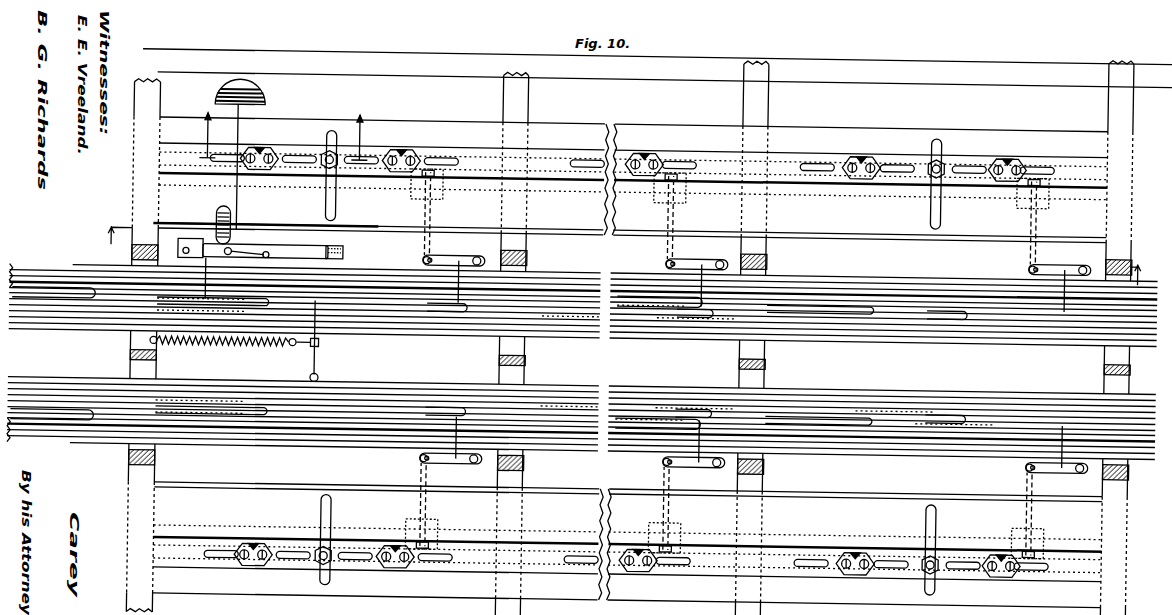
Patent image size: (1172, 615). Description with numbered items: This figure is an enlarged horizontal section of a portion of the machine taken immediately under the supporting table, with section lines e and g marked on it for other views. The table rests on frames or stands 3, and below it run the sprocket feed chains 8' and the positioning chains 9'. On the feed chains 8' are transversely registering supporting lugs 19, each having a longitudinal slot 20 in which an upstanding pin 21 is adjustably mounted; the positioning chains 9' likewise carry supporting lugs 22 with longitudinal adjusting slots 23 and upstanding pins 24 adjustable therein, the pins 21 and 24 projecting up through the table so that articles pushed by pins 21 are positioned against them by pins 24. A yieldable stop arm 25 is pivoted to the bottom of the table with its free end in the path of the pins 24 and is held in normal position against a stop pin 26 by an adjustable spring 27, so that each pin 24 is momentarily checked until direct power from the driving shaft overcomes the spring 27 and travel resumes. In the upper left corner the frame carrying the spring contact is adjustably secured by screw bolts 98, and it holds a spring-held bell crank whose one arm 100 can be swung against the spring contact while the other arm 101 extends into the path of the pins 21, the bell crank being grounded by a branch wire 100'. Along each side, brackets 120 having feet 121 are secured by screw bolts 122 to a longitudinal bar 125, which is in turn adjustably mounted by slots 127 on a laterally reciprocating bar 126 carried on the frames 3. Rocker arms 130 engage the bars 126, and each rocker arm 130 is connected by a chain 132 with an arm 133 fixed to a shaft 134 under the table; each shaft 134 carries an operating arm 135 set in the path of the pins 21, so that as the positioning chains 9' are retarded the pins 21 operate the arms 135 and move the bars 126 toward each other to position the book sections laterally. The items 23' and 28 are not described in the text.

The frame 3 is at (131, 347).
The sprocket feed chain 8' is at (582, 364).
The positioning chain 9' is at (582, 362).
The supporting lug 19 is at (1010, 448).
The longitudinal slot 20 is at (930, 285).
The upstanding pin 21 is at (427, 47).
The supporting lug 22 is at (800, 400).
The longitudinal adjusting slot 23 is at (582, 353).
The upper rail 23' is at (665, 87).
The upstanding pin 24 is at (398, 92).
The yieldable stop arm 25 is at (285, 243).
The stop pin 26 is at (346, 250).
The adjustable spring 27 is at (348, 256).
The lever bar 28 is at (330, 254).
The screw bolt 98 is at (186, 246).
The bell crank arm 100 is at (234, 252).
The branch wire 100' is at (258, 166).
The bell crank arm 101 is at (220, 218).
The bracket 120 is at (272, 150).
The foot 121 is at (264, 168).
The screw bolt 122 is at (680, 160).
The longitudinal bar 125 is at (470, 154).
The laterally reciprocating bar 126 is at (558, 126).
The slot 127 is at (262, 106).
The rocker arm 130 is at (440, 192).
The chain 132 is at (425, 252).
The arm 133 is at (1070, 262).
The shaft 134 is at (518, 255).
The operating arm 135 is at (466, 256).
The section line e is at (626, 252).
The section line g is at (279, 131).